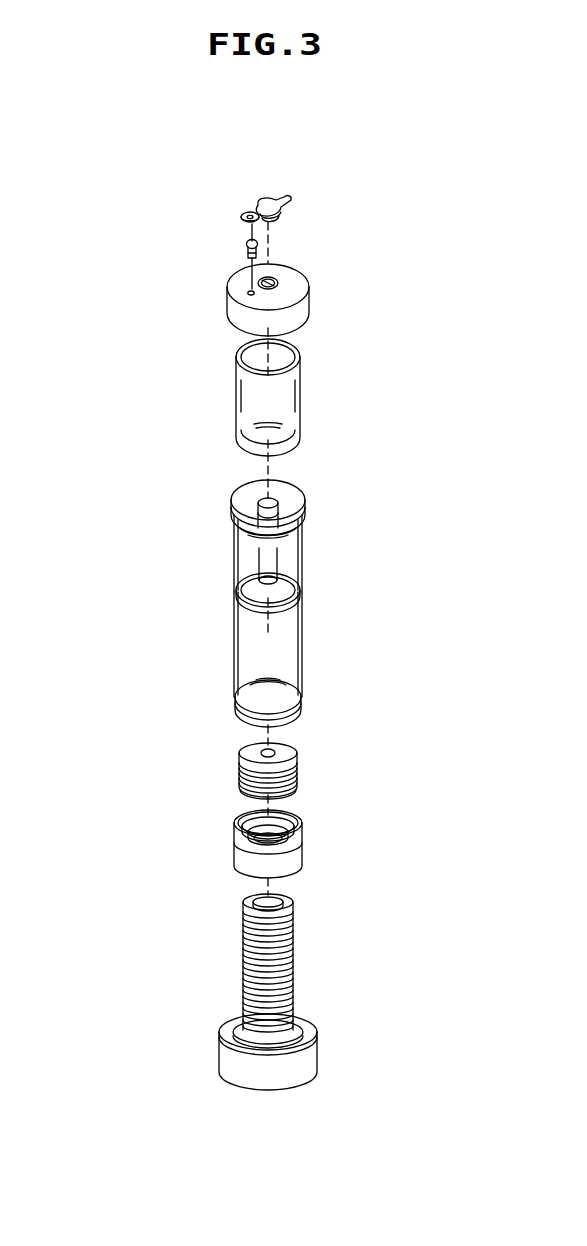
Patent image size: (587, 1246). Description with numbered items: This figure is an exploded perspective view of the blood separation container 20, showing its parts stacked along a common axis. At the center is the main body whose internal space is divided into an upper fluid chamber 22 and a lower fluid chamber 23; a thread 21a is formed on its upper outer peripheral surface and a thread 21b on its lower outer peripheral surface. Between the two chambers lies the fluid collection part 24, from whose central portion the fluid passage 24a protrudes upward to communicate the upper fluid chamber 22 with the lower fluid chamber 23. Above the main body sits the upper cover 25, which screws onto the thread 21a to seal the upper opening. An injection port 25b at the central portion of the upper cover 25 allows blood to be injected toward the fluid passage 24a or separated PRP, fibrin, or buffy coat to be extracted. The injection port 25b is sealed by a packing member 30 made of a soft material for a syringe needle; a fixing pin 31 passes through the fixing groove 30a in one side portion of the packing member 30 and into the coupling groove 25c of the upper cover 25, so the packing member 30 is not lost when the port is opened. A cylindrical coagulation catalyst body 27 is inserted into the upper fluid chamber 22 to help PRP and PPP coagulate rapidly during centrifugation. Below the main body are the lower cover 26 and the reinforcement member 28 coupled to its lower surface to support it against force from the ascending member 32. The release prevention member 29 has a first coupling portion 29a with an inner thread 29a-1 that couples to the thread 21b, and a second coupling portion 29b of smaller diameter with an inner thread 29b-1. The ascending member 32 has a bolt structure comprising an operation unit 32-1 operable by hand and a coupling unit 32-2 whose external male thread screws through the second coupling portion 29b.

The blood separation container 20 is at (97, 267).
The thread 21a is at (300, 513).
The thread 21b is at (301, 705).
The upper fluid chamber 22 is at (301, 534).
The lower fluid chamber 23 is at (297, 660).
The fluid collection part 24 is at (300, 596).
The fluid passage 24a is at (280, 566).
The upper cover 25 is at (308, 300).
The injection port 25b is at (272, 278).
The coupling groove 25c is at (248, 292).
The lower cover 26 is at (297, 770).
The coagulation catalyst body 27 is at (292, 408).
The reinforcement member 28 is at (283, 797).
The release prevention member 29 is at (128, 780).
The first coupling portion 29a is at (236, 830).
The thread 29a-1 is at (303, 827).
The second coupling portion 29b is at (237, 850).
The thread 29b-1 is at (283, 845).
The packing member 30 is at (277, 198).
The fixing groove 30a is at (250, 215).
The fixing pin 31 is at (247, 250).
The ascending member 32 is at (400, 966).
The operation unit 32-1 is at (308, 1052).
The coupling unit 32-2 is at (293, 985).